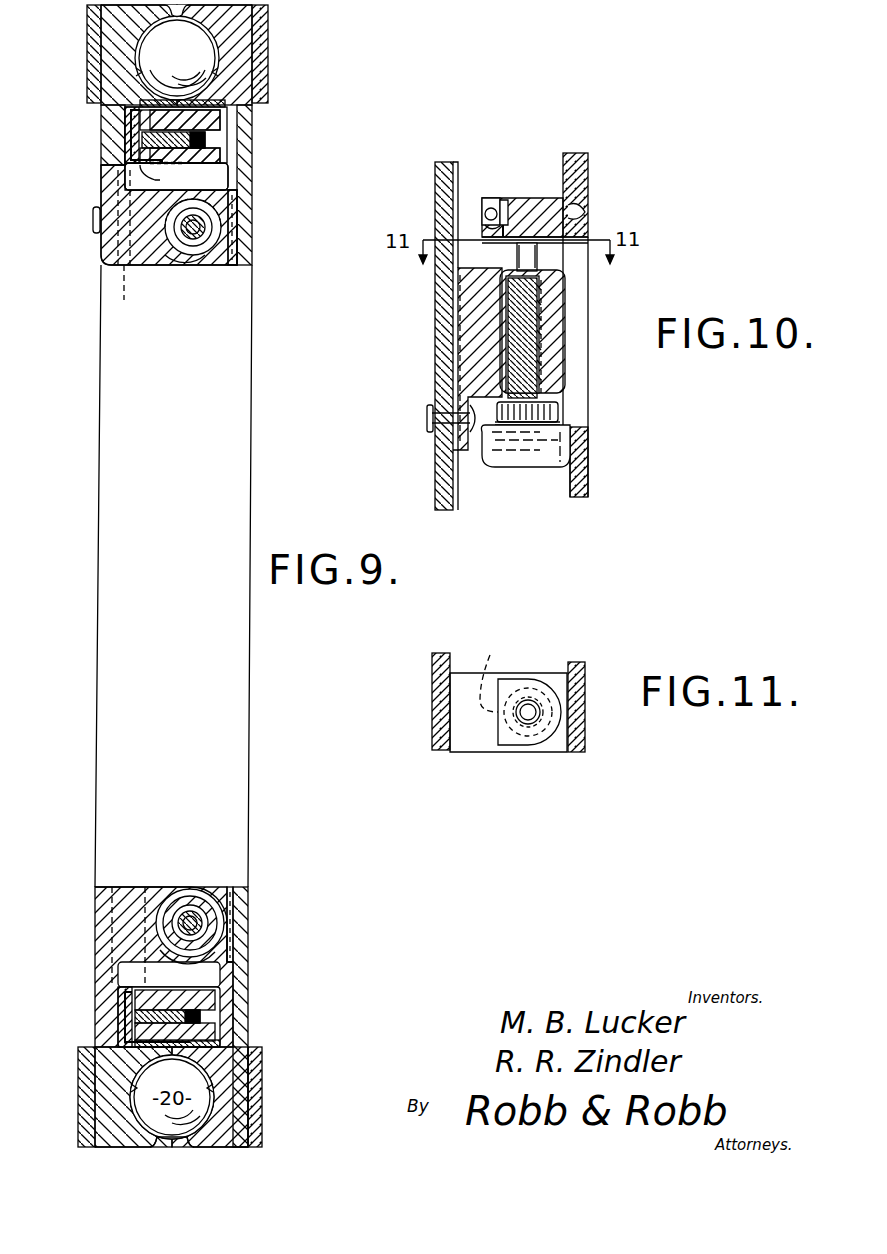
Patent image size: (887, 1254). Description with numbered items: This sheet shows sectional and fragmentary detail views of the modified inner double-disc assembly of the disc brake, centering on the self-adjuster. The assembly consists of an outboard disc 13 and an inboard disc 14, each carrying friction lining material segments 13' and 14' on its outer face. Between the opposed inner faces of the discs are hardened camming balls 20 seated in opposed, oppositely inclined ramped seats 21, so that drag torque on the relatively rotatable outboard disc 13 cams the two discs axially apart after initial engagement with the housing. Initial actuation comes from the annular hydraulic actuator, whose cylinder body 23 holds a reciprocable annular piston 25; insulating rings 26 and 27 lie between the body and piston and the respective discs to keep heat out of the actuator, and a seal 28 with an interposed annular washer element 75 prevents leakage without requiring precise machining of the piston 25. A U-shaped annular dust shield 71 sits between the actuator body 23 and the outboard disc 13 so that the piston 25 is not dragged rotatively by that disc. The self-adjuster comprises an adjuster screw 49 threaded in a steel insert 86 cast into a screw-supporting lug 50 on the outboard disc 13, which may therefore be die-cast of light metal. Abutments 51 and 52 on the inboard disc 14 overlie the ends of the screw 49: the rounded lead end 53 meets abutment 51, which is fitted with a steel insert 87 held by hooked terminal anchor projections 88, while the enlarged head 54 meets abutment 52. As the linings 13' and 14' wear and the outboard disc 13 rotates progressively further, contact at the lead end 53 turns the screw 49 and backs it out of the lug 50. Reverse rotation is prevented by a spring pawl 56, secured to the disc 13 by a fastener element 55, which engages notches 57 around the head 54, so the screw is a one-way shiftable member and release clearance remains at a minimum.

In FIG. 9, the outboard disc 13 is at (105, 85).
In FIG. 10, the outboard disc 13 is at (421, 336).
In FIG. 11, the outboard disc 13 is at (419, 701).
In FIG. 9, the friction lining material segments 13' is at (65, 576).
In FIG. 9, the inboard disc 14 is at (246, 576).
In FIG. 10, the inboard disc 14 is at (599, 325).
In FIG. 11, the inboard disc 14 is at (602, 699).
In FIG. 9, the friction lining material segments 14' is at (285, 576).
In FIG. 9, the camming balls 20 is at (174, 576).
In FIG. 9, the ramped seats 21 is at (140, 72).
In FIG. 9, the annular cylinder body 23 is at (210, 165).
In FIG. 9, the annular piston 25 is at (142, 140).
In FIG. 9, the insulating ring 26 is at (130, 150).
In FIG. 9, the insulating ring 27 is at (222, 117).
In FIG. 9, the seal 28 is at (206, 140).
In FIG. 9, the adjuster screw 49 is at (195, 255).
In FIG. 10, the adjuster screw 49 is at (510, 352).
In FIG. 11, the adjuster screw 49 is at (528, 718).
In FIG. 9, the screw-supporting lug 50 is at (205, 265).
In FIG. 10, the screw-supporting lug 50 is at (488, 333).
In FIG. 11, the screw-supporting lug 50 is at (480, 752).
In FIG. 9, the abutment 51 is at (230, 890).
In FIG. 10, the abutment 51 is at (530, 205).
In FIG. 9, the abutment 52 is at (234, 200).
In FIG. 10, the abutment 52 is at (528, 460).
In FIG. 11, the abutment 52 is at (497, 640).
In FIG. 10, the rounded lead end 53 is at (516, 255).
In FIG. 10, the enlarged head 54 is at (558, 408).
In FIG. 9, the fastener element 55 is at (96, 228).
In FIG. 9, the spring pawl 56 is at (130, 265).
In FIG. 10, the notches 57 is at (562, 420).
In FIG. 9, the dust shield 71 is at (190, 176).
In FIG. 9, the annular washer element 75 is at (218, 160).
In FIG. 9, the insert 86 is at (222, 232).
In FIG. 10, the insert 86 is at (545, 300).
In FIG. 11, the insert 86 is at (545, 738).
In FIG. 10, the insert 87 is at (503, 218).
In FIG. 10, the terminal anchor projections 88 is at (485, 225).